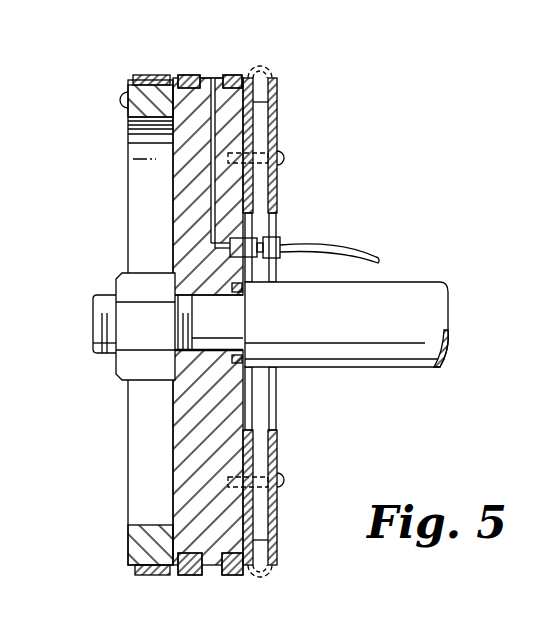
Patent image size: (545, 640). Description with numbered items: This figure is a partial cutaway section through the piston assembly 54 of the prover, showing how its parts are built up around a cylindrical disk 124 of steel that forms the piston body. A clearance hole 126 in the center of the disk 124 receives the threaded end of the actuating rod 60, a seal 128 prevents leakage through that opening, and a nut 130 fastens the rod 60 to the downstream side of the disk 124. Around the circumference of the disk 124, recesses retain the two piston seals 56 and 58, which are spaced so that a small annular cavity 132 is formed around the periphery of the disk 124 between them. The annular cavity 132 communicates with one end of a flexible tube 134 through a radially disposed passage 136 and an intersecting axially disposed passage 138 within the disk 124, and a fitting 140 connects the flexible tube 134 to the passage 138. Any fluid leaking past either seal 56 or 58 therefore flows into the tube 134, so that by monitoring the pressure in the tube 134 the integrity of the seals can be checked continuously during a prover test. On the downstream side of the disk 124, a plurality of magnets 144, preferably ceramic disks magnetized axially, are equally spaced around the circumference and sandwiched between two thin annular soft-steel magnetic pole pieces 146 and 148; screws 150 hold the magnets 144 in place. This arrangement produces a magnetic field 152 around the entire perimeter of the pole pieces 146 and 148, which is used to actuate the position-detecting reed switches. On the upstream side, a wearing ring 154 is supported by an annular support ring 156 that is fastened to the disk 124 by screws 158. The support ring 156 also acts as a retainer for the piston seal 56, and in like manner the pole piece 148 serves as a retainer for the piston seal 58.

The piston assembly 54 is at (122, 137).
The piston seal 56 is at (191, 576).
The piston seal 58 is at (225, 576).
The actuating rod 60 is at (423, 282).
The cylindrical disk 124 is at (166, 439).
The clearance hole 126 is at (180, 272).
The seal 128 is at (175, 382).
The nut 130 is at (116, 280).
The annular cavity 132 is at (210, 78).
The flexible tube 134 is at (374, 250).
The radially disposed passage 136 is at (205, 187).
The axially disposed passage 138 is at (225, 237).
The fitting 140 is at (278, 240).
The magnets 144 is at (255, 136).
The magnetic pole piece 146 is at (276, 88).
The magnetic pole piece 148 is at (243, 72).
The screws 150 is at (284, 157).
The magnetic field 152 is at (272, 66).
The wearing ring 154 is at (136, 570).
The annular support ring 156 is at (130, 80).
The screws 158 is at (118, 99).